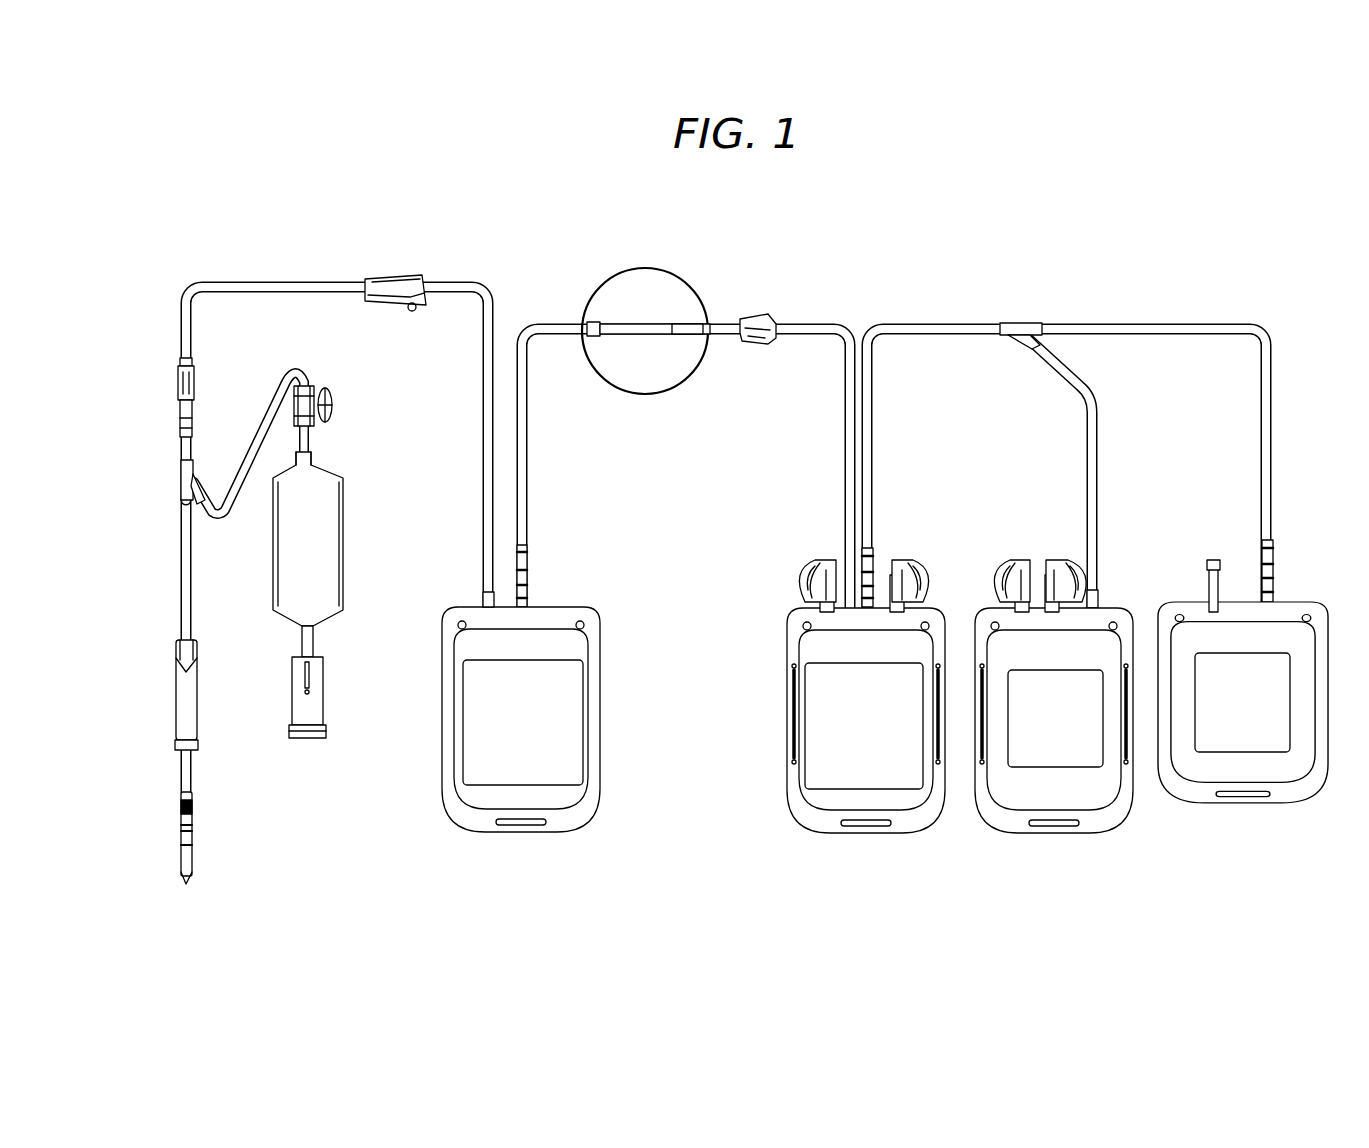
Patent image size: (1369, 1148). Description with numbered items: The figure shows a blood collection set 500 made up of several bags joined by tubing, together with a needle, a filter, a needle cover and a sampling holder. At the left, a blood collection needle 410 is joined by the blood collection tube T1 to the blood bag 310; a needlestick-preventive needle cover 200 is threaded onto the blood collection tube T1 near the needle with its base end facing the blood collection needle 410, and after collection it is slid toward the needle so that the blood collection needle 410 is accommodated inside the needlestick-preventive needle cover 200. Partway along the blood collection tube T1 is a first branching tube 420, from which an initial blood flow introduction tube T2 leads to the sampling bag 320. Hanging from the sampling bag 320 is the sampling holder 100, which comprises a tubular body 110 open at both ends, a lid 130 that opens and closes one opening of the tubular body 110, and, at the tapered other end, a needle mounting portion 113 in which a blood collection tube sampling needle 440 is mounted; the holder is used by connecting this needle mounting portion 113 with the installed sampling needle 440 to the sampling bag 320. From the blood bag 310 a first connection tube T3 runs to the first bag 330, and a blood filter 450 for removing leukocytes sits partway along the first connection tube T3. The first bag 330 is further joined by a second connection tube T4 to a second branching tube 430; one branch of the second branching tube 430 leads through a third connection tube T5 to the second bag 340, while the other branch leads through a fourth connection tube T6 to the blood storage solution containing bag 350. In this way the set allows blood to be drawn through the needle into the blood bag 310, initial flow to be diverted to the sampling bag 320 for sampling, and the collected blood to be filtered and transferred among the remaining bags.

The blood collection set 500 is at (1290, 237).
The sampling holder 100 is at (313, 715).
The tubular body 110 is at (292, 708).
The needle mounting portion 113 is at (300, 645).
The lid 130 is at (308, 738).
The needlestick-preventive needle cover 200 is at (174, 684).
The blood bag 310 is at (490, 778).
The sampling bag 320 is at (330, 532).
The first bag 330 is at (840, 778).
The second bag 340 is at (1027, 778).
The blood storage solution containing bag 350 is at (1213, 758).
The blood collection needle 410 is at (183, 828).
The first branching tube 420 is at (180, 476).
The second branching tube 430 is at (1020, 323).
The blood collection tube sampling needle 440 is at (294, 677).
The blood filter 450 is at (691, 287).
The blood collection tube T1 is at (482, 432).
The initial blood flow introduction tube T2 is at (264, 420).
The first connection tube T3 is at (842, 443).
The second connection tube T4 is at (872, 442).
The third connection tube T5 is at (1098, 442).
The fourth connection tube T6 is at (1272, 442).